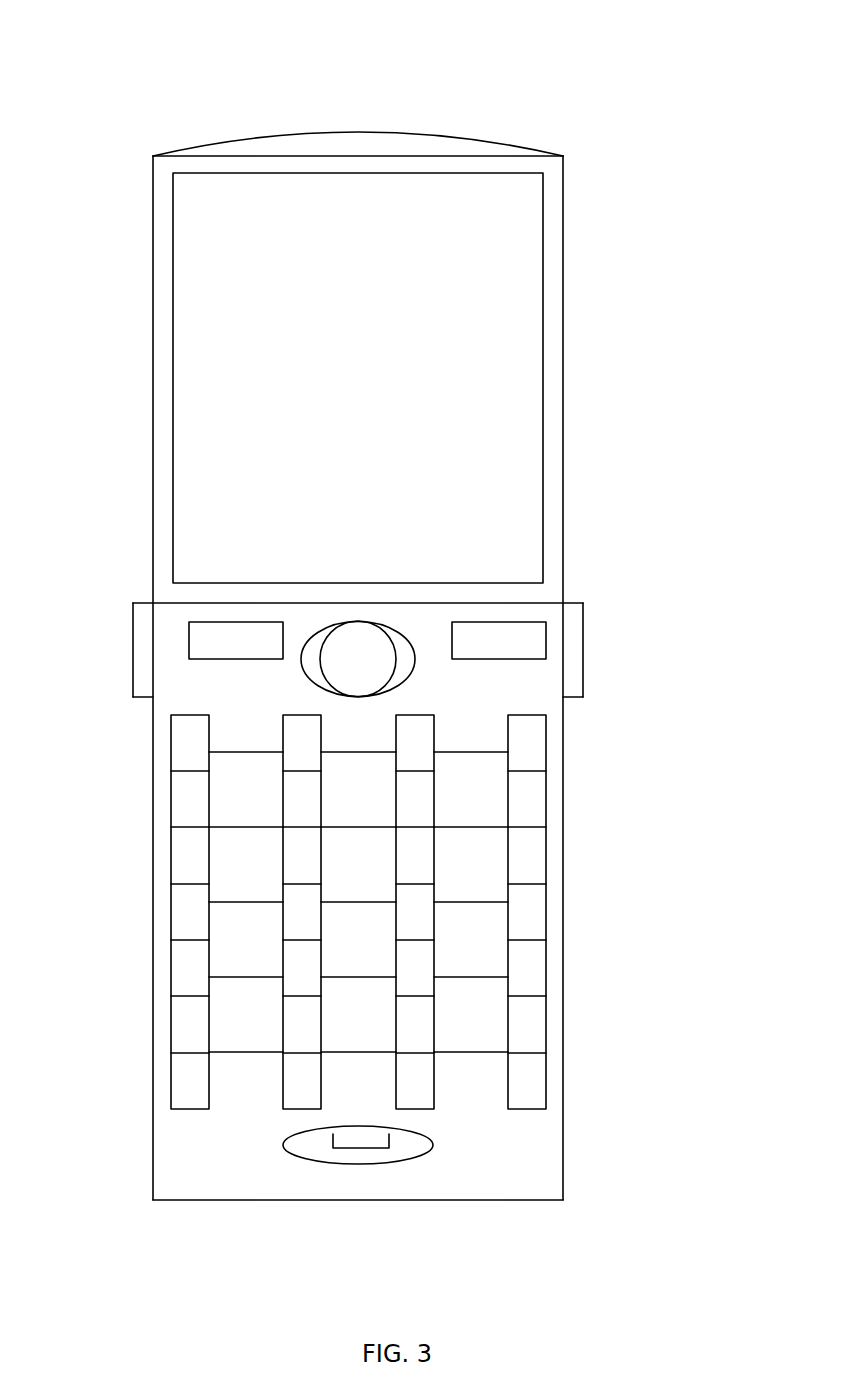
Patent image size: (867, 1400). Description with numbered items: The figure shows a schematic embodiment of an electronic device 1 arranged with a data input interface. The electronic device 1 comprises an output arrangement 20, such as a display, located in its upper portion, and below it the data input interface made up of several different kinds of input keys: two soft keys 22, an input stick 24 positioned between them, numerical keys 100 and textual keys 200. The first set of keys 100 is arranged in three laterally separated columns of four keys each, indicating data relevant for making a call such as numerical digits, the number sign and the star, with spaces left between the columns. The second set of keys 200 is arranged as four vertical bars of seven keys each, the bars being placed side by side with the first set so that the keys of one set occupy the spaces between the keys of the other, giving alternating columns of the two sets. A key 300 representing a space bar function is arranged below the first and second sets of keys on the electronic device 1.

The electronic device 1 is at (613, 108).
The output arrangement 20 is at (370, 320).
The soft keys 22 is at (208, 640).
The input stick 24 is at (370, 661).
The first set of keys 100 is at (227, 808).
The second set of keys 200 is at (527, 779).
The key representing a space bar function 300 is at (357, 1153).